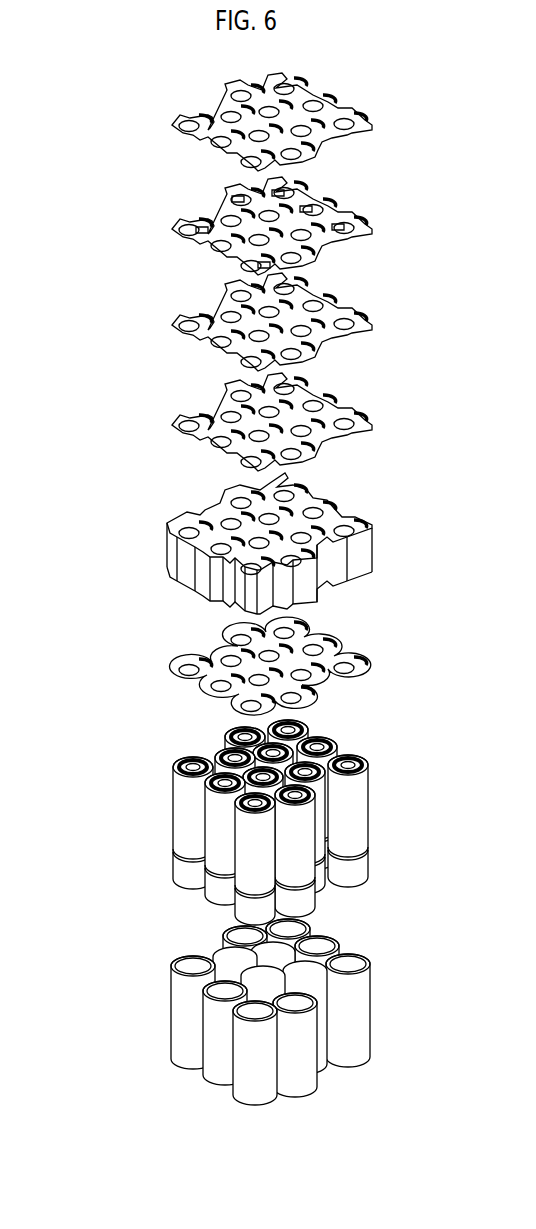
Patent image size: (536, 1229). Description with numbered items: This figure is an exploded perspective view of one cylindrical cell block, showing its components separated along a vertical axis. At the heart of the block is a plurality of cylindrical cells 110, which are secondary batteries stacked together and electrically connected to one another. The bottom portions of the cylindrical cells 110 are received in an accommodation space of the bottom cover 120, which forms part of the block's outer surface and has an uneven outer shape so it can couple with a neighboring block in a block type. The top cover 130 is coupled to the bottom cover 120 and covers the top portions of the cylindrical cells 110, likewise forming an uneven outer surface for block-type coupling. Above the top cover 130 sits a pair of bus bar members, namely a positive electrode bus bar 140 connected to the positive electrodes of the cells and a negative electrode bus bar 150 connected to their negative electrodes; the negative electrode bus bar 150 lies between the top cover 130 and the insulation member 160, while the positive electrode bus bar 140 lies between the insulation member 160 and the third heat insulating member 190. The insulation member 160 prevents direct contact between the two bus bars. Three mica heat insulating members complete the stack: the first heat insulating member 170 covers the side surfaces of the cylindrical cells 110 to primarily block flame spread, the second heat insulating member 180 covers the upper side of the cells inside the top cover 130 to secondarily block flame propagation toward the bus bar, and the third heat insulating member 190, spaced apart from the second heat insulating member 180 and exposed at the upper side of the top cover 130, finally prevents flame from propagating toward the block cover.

The cylindrical cell 110 is at (380, 879).
The bottom cover 120 is at (311, 1012).
The top cover 130 is at (309, 543).
The positive electrode bus bar 140 is at (312, 226).
The negative electrode bus bar 150 is at (312, 422).
The insulation member 160 is at (312, 322).
The first heat insulating member 170 is at (309, 822).
The second heat insulating member 180 is at (311, 666).
The third heat insulating member 190 is at (312, 122).